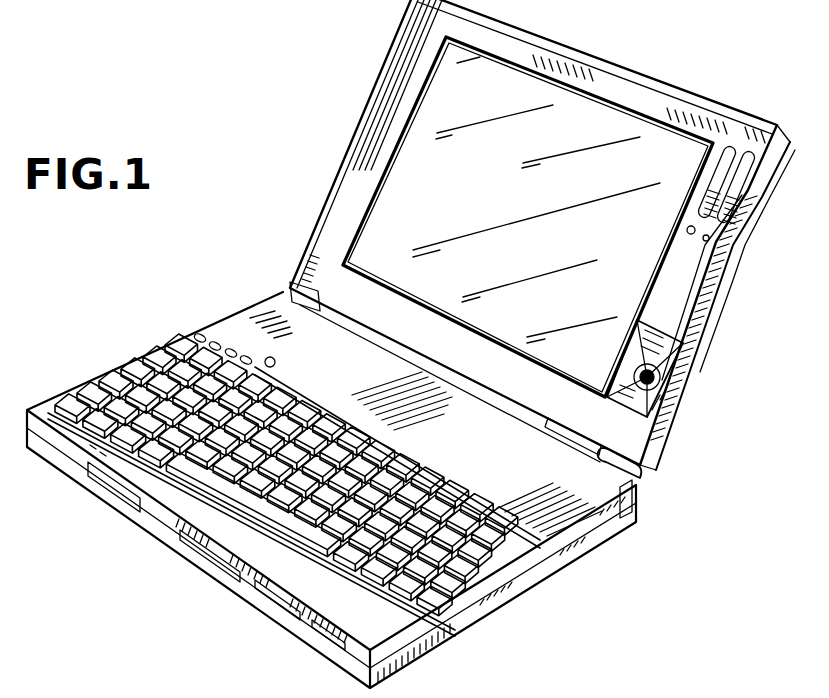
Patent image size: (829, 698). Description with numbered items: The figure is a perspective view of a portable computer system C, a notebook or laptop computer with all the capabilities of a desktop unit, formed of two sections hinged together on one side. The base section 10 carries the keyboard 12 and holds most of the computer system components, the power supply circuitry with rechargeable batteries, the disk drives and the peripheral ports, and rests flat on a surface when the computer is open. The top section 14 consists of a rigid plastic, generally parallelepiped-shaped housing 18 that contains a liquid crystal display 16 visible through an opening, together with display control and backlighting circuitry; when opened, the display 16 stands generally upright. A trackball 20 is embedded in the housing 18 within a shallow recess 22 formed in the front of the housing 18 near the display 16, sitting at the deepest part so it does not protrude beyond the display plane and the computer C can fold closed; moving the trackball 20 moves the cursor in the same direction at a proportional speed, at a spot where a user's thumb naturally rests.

The base section 10 is at (287, 637).
The keyboard 12 is at (477, 604).
The top section 14 is at (327, 203).
The display 16 is at (440, 124).
The housing 18 is at (704, 96).
The trackball 20 is at (668, 395).
The recess 22 is at (688, 335).
The portable computer system C is at (155, 310).